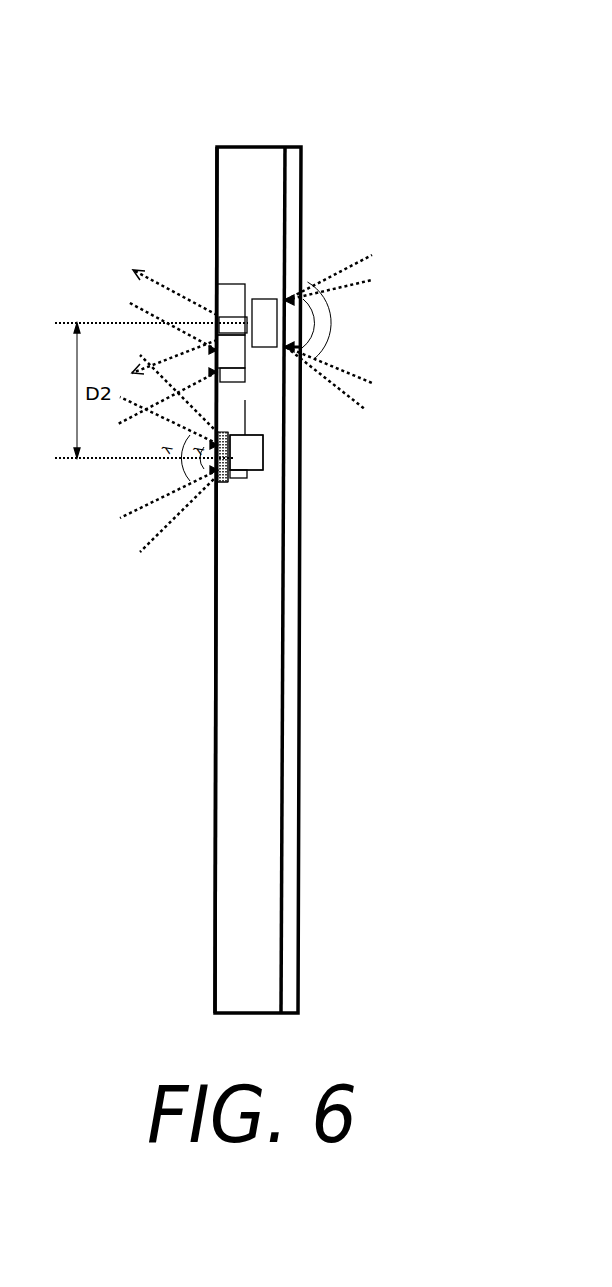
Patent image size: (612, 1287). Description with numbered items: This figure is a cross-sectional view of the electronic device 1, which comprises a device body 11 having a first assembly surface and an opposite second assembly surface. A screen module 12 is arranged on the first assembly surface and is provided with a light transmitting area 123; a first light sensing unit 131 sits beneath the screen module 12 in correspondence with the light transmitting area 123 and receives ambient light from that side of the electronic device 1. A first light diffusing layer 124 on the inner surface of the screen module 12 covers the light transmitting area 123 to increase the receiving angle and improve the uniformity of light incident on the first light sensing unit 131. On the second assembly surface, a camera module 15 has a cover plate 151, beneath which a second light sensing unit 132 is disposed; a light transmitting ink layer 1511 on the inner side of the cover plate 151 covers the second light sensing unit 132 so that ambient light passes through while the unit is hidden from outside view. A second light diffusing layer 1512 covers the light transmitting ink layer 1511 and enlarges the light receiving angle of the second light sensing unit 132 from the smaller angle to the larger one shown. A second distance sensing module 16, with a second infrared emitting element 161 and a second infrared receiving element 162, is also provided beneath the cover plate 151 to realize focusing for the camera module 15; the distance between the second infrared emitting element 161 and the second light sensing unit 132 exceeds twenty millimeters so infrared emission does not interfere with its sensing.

The electronic device 1 is at (403, 103).
The device body 11 is at (235, 640).
The screen module 12 is at (290, 788).
The light transmitting area 123 is at (288, 302).
The first light diffusing layer 124 is at (281, 300).
The first light sensing unit 131 is at (262, 323).
The second light sensing unit 132 is at (264, 470).
The camera module 15 is at (230, 422).
The cover plate 151 is at (233, 327).
The light transmitting ink layer 1511 is at (200, 462).
The second light diffusing layer 1512 is at (224, 482).
The second distance sensing module 16 is at (155, 229).
The second infrared emitting element 161 is at (215, 310).
The second infrared receiving element 162 is at (224, 290).